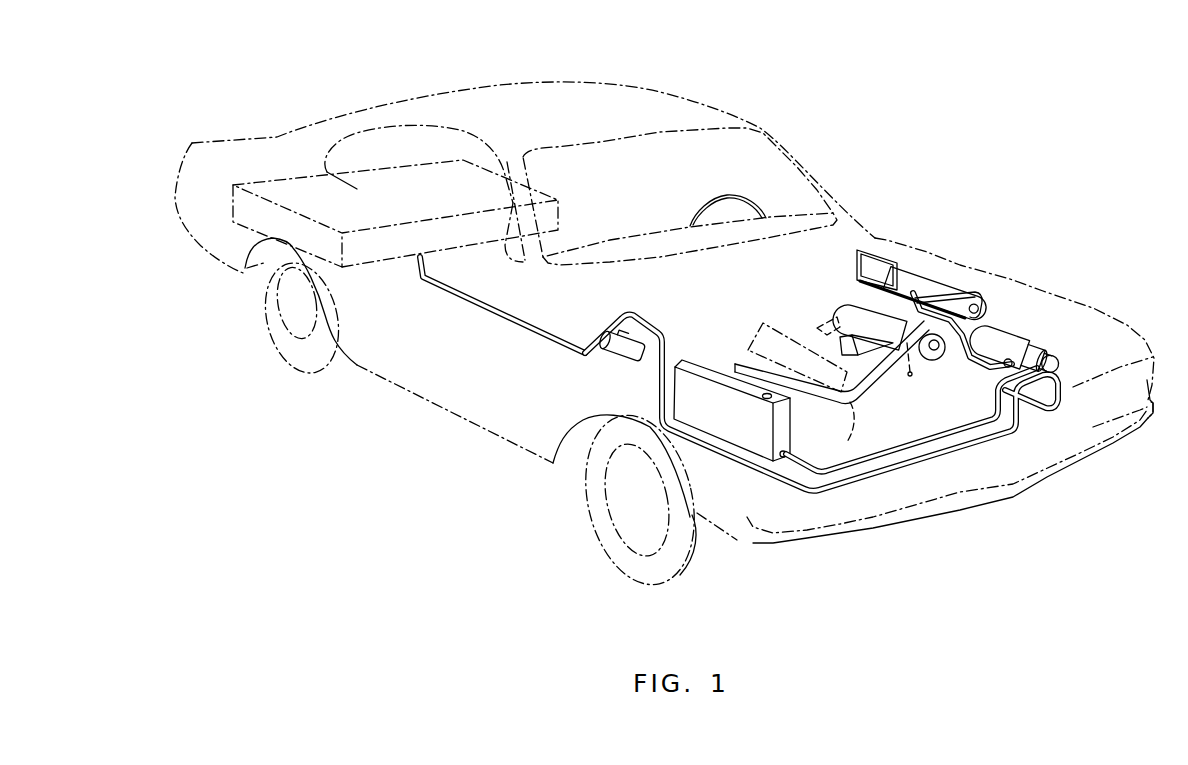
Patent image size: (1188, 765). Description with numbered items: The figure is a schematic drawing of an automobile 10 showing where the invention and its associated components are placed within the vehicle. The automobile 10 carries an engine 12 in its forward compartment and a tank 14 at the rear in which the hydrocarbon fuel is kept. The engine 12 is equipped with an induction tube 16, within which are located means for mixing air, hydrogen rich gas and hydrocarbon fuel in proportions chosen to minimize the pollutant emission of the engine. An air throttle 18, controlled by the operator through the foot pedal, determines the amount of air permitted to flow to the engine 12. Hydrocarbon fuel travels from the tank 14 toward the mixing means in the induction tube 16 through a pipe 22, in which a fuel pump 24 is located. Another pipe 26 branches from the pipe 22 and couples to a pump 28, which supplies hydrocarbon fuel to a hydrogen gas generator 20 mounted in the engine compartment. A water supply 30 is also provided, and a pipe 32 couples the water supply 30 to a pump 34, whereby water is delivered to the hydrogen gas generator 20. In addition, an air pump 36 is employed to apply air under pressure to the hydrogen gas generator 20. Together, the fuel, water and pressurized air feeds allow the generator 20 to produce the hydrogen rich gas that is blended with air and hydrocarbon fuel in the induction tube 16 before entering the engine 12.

The automobile 10 is at (662, 96).
The engine 12 is at (906, 401).
The tank 14 is at (274, 182).
The induction tube 16 is at (848, 306).
The air throttle 18 is at (817, 327).
The hydrogen gas generator 20 is at (915, 292).
The pipe 22 is at (511, 316).
The fuel pump 24 is at (633, 359).
The pipe 26 is at (764, 474).
The pump 28 is at (1058, 348).
The water supply 30 is at (791, 438).
The pipe 32 is at (974, 424).
The pump 34 is at (1053, 333).
The air pump 36 is at (1033, 327).